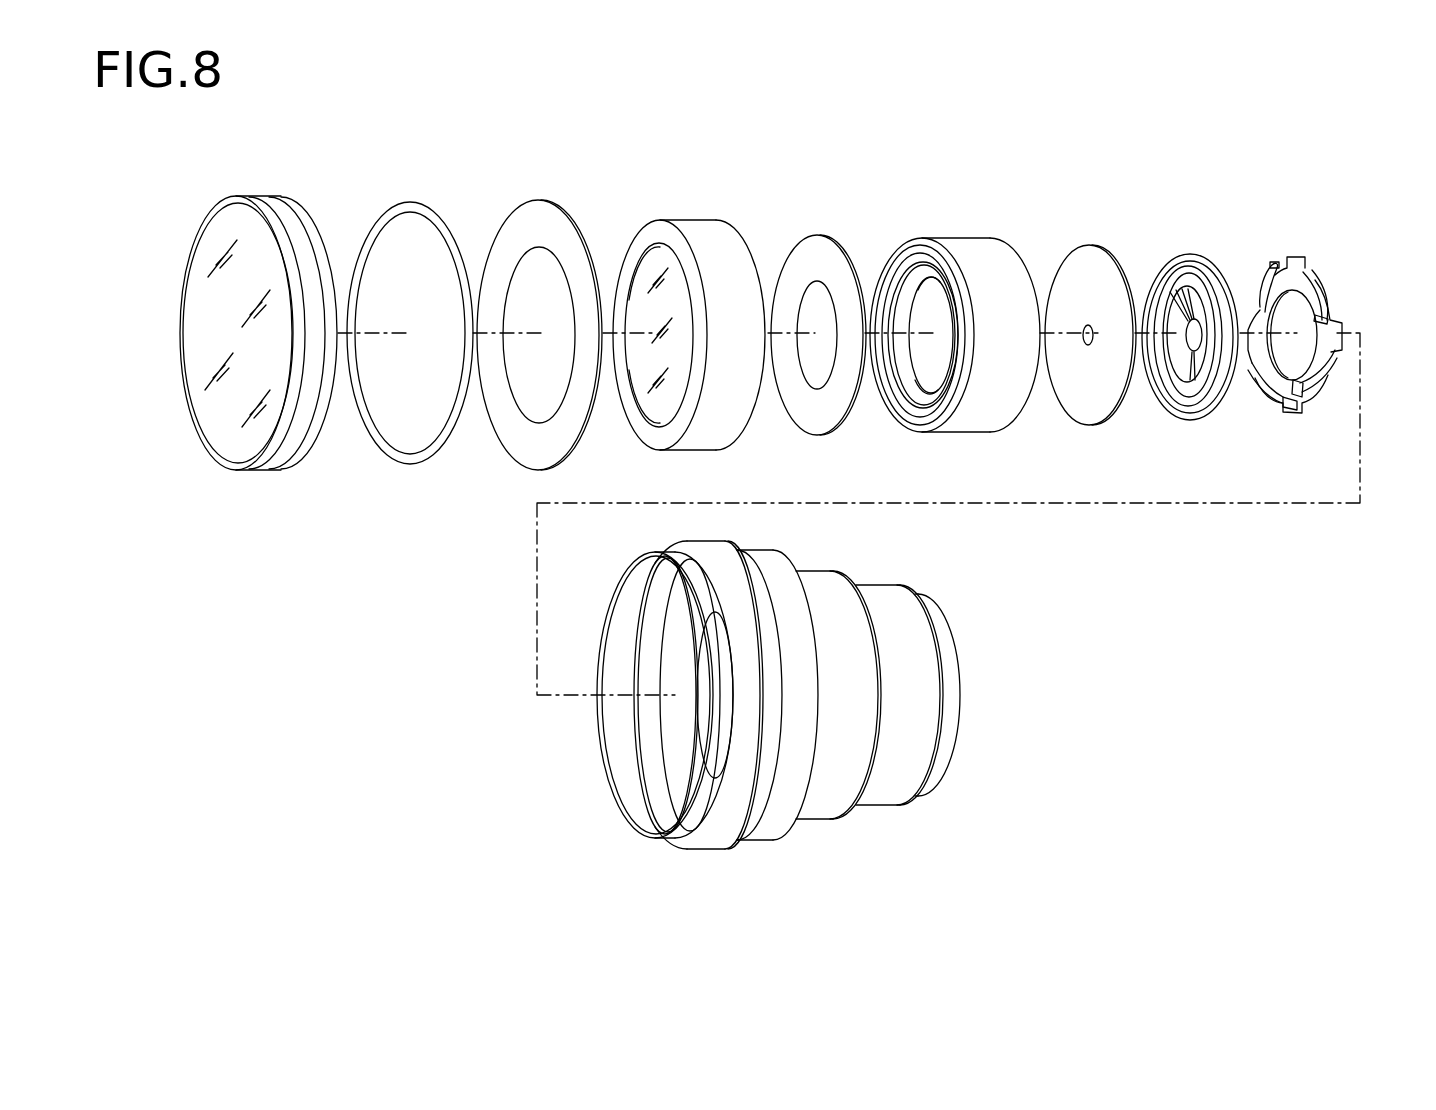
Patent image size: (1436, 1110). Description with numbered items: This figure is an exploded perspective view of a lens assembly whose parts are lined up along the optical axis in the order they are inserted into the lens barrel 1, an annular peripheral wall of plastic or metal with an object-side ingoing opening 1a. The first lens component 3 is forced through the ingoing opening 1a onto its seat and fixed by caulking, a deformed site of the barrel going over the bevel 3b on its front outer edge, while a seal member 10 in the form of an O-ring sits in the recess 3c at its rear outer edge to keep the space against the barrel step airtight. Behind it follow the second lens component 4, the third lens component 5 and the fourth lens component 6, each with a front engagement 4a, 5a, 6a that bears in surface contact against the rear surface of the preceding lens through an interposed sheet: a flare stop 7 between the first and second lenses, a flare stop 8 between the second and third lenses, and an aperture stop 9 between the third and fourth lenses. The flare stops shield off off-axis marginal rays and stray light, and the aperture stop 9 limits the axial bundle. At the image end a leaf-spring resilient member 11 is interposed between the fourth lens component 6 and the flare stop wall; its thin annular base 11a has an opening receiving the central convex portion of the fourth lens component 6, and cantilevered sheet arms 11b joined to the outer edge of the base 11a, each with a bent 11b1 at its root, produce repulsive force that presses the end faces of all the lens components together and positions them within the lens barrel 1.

The lens barrel 1 is at (878, 582).
The ingoing opening 1a is at (622, 757).
The first lens component 3 is at (272, 198).
The bevel 3b is at (250, 466).
The recess 3c is at (297, 442).
The second lens component 4 is at (704, 221).
The engagement 4a is at (645, 430).
The third lens component 5 is at (950, 237).
The engagement 5a is at (905, 420).
The fourth lens component 6 is at (1190, 255).
The engagement 6a is at (1170, 395).
The flare stop 7 is at (548, 198).
The flare stop 8 is at (822, 236).
The aperture stop 9 is at (1090, 245).
The seal member 10 is at (408, 464).
The resilient member 11 is at (1300, 346).
The annular base 11a is at (1275, 300).
The arm 11b is at (1264, 262).
The bent 11b1 is at (1370, 410).